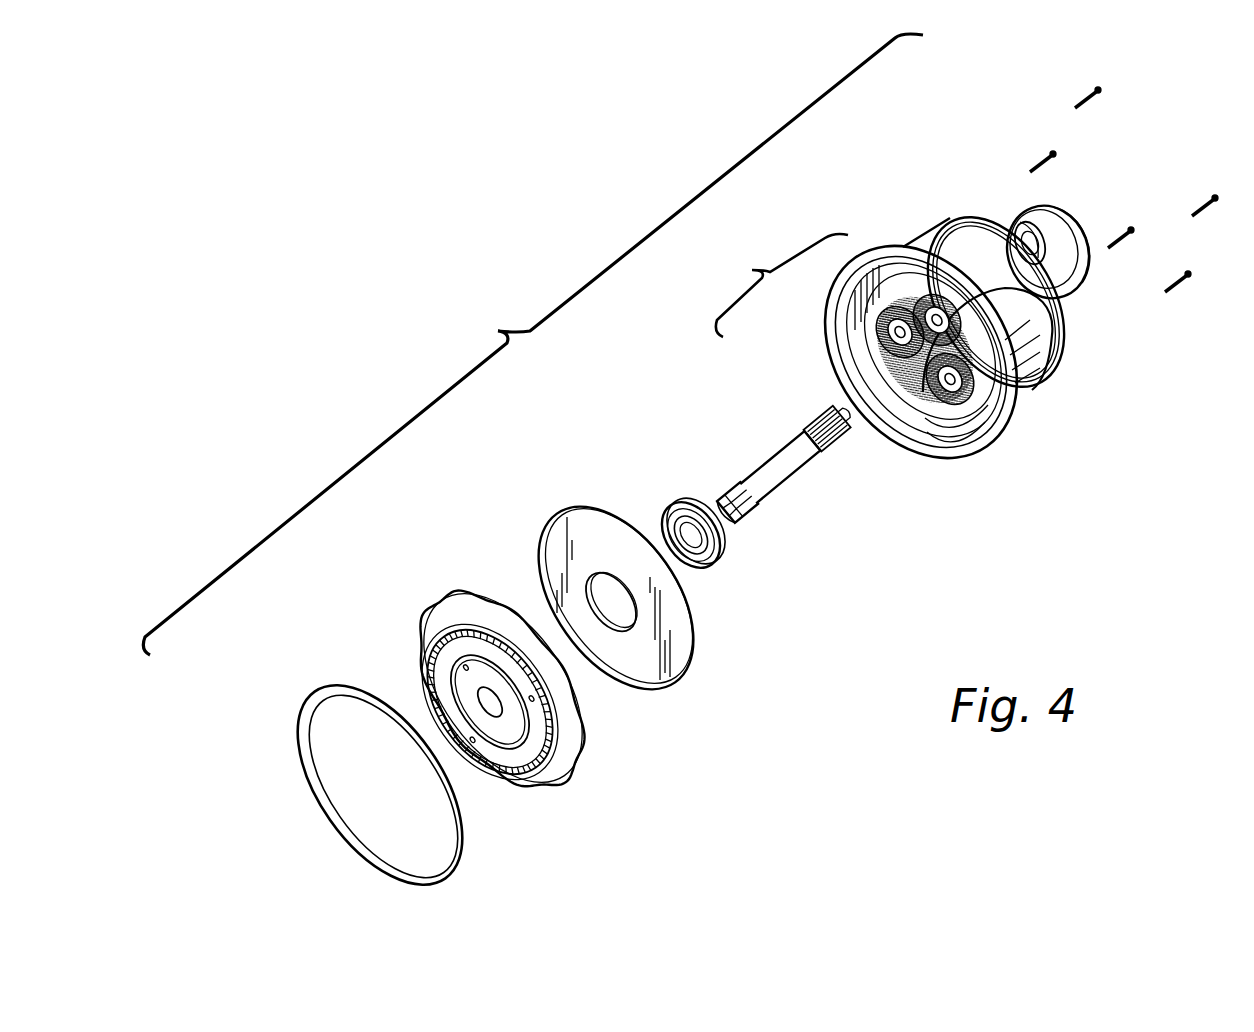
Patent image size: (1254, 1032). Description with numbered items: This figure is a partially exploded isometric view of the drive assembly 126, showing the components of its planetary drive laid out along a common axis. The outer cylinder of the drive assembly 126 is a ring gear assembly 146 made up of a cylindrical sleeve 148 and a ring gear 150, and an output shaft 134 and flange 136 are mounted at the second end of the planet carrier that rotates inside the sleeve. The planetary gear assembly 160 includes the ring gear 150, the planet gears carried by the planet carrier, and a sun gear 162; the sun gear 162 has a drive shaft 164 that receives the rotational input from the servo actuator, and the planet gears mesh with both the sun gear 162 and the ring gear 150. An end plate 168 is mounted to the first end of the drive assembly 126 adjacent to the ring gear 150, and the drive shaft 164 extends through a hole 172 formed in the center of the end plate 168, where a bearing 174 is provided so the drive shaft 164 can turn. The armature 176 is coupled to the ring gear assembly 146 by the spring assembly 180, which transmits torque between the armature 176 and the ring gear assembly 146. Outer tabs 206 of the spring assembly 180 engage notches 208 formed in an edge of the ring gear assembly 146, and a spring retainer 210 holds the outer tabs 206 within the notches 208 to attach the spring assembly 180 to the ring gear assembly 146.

The drive assembly 126 is at (533, 344).
The output shaft 134 is at (1017, 222).
The flange 136 is at (1067, 227).
The ring gear assembly 146 is at (1027, 386).
The cylindrical sleeve 148 is at (936, 240).
The ring gear 150 is at (923, 392).
The planetary gear assembly 160 is at (776, 285).
The sun gear 162 is at (820, 415).
The drive shaft 164 is at (762, 468).
The end plate 168 is at (577, 543).
The hole 172 is at (620, 606).
The bearing 174 is at (722, 546).
The armature 176 is at (493, 772).
The spring assembly 180 is at (455, 607).
The outer tabs 206 is at (578, 757).
The notches 208 is at (1055, 318).
The spring retainer 210 is at (330, 820).